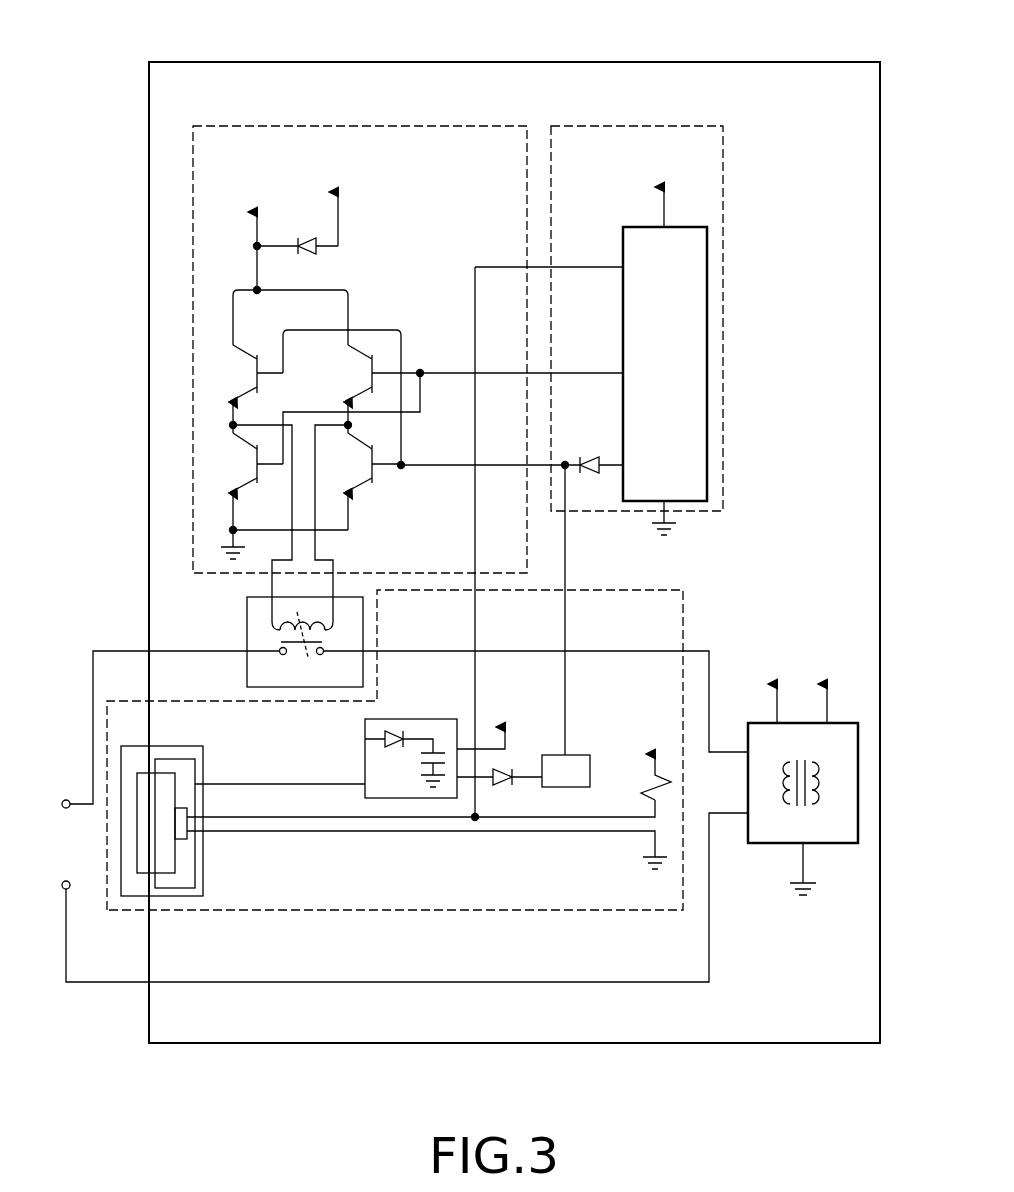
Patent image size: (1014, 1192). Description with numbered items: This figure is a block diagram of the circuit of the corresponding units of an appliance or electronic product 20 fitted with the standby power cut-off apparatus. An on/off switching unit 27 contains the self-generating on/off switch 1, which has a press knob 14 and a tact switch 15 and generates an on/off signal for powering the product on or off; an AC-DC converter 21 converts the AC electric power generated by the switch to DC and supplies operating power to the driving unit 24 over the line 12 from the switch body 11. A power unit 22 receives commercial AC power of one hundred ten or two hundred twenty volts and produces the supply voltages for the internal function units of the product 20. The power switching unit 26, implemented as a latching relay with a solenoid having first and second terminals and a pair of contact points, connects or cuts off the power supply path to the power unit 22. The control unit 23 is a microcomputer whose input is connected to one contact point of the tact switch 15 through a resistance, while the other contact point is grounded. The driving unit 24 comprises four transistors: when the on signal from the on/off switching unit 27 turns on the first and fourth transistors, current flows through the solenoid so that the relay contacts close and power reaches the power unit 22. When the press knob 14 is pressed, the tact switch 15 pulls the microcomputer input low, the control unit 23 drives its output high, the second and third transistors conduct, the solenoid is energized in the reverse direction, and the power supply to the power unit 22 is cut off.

The corresponding product 20 is at (512, 62).
The driving unit 24 is at (357, 126).
The control unit 23 is at (658, 126).
The power switching unit 26 is at (247, 621).
The on/off switching unit 27 is at (107, 718).
The self-generating on/off switch 1 is at (128, 764).
The plug body 11 is at (180, 762).
The signal line 12 is at (301, 783).
The press knob 14 is at (146, 865).
The tact switch 15 is at (180, 840).
The AC-DC converter 21 is at (413, 718).
The power unit 22 is at (835, 845).